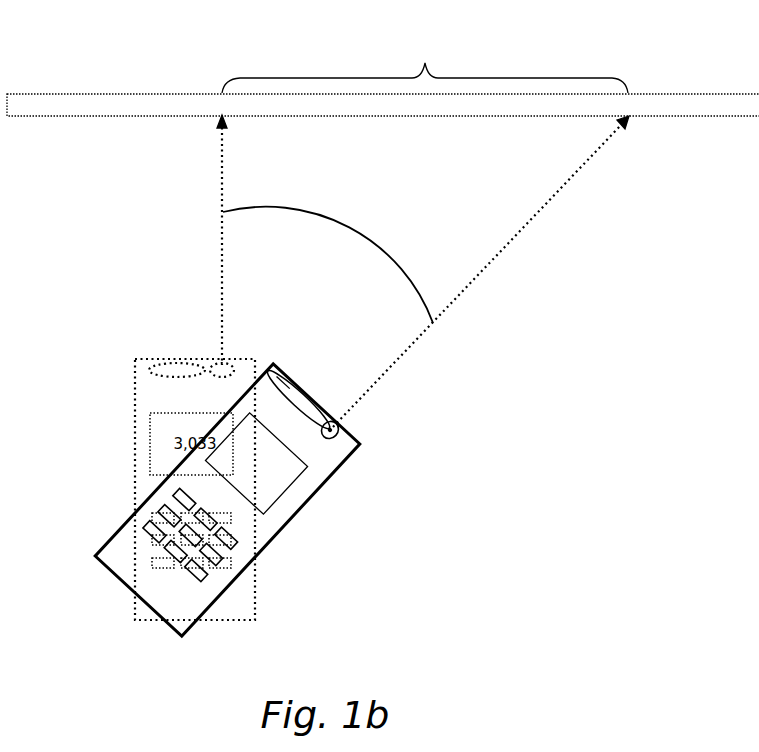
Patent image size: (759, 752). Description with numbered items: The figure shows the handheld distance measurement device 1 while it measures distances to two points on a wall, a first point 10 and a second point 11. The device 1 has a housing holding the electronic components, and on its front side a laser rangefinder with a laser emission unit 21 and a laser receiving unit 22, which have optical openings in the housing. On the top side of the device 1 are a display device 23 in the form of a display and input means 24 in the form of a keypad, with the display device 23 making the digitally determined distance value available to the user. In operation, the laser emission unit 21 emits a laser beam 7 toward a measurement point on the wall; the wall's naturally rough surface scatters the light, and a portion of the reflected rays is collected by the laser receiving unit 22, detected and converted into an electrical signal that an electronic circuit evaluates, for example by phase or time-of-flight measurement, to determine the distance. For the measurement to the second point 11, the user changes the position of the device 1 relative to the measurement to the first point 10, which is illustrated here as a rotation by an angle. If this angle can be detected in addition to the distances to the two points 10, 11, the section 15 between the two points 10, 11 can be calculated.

The handheld distance measurement device 1 is at (386, 470).
The laser beam 7 is at (502, 250).
The first point 10 is at (224, 118).
The second point 11 is at (631, 118).
The section 15 is at (425, 60).
The laser emission unit 21 is at (340, 423).
The laser receiving unit 22 is at (277, 377).
The display device 23 is at (267, 498).
The input means 24 is at (140, 538).